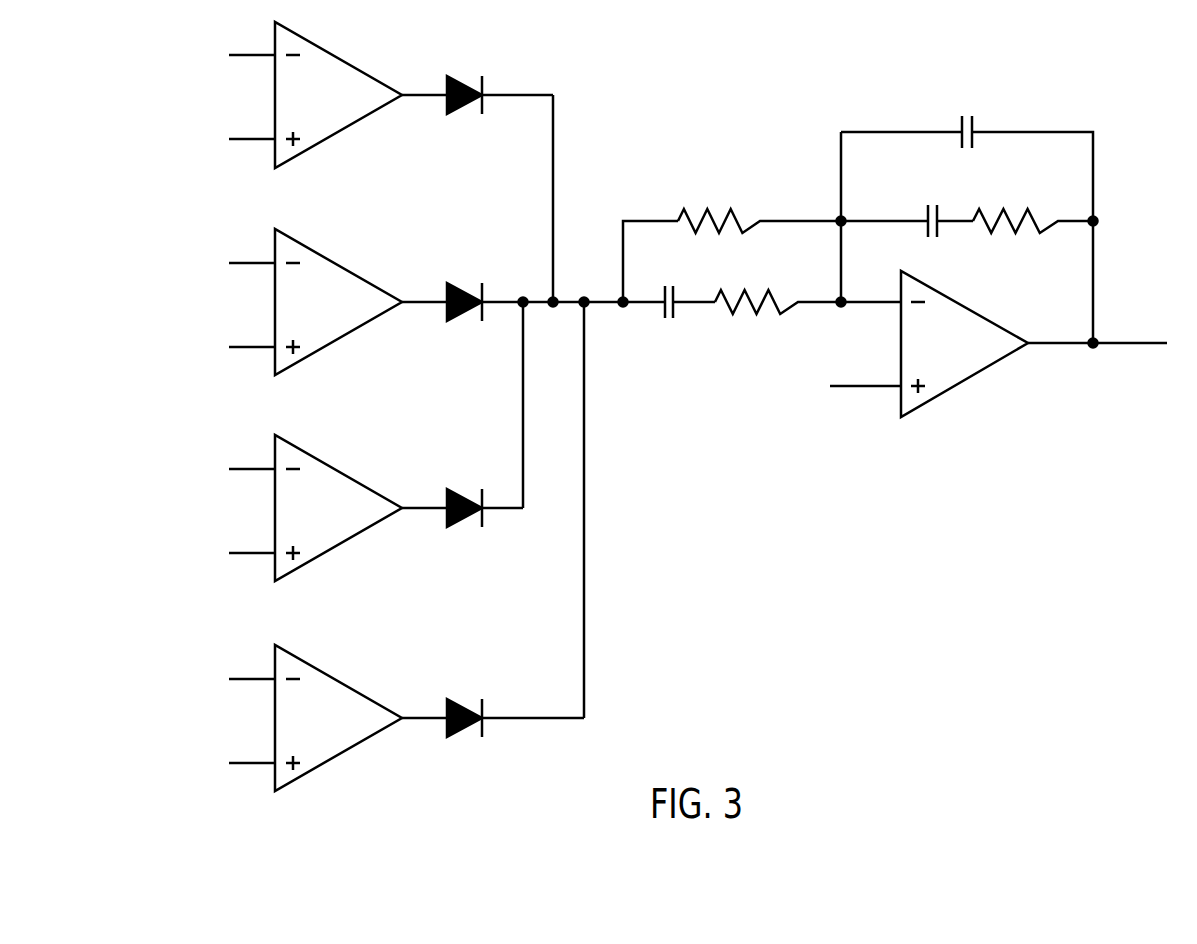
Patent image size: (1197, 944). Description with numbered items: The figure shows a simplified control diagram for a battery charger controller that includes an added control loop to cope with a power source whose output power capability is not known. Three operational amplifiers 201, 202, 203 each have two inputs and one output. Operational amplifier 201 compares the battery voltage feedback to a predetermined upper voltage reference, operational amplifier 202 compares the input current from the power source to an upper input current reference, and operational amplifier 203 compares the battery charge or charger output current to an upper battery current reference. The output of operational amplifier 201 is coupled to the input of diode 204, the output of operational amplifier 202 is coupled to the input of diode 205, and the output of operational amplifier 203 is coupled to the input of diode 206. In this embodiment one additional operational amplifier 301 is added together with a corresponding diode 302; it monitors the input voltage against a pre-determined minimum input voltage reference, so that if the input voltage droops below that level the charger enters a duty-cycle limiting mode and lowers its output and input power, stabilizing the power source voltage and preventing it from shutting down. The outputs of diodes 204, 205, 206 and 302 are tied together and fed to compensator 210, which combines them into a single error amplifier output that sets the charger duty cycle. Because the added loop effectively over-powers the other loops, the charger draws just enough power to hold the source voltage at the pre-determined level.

The operational amplifier 201 is at (340, 58).
The operational amplifier 202 is at (333, 262).
The operational amplifier 203 is at (332, 467).
The diode 204 is at (462, 82).
The diode 205 is at (459, 285).
The diode 206 is at (458, 493).
The compensator 210 is at (897, 323).
The operational amplifier 301 is at (332, 675).
The diode 302 is at (458, 702).